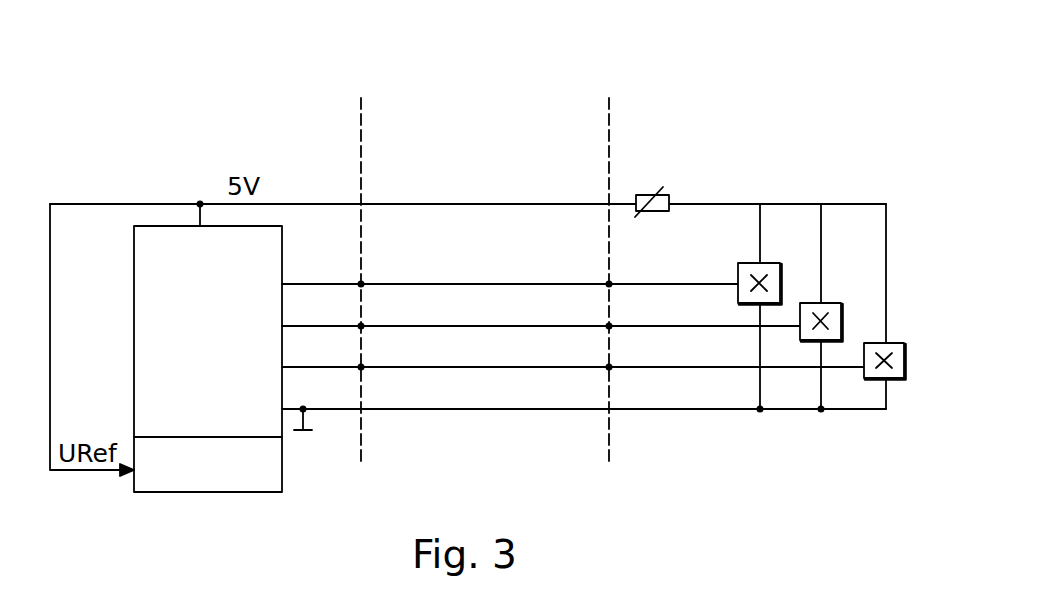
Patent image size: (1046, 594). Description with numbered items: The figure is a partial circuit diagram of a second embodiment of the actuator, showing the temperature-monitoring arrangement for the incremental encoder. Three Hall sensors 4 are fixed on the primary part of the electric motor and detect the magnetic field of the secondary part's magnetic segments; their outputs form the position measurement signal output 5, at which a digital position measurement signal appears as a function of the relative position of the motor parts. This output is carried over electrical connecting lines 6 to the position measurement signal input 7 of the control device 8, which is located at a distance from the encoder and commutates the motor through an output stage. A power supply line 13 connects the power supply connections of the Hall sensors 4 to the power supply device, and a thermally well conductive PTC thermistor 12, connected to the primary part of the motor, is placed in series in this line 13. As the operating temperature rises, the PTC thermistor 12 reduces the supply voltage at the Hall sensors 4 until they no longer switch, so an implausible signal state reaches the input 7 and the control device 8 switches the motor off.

The Hall sensors 4 is at (812, 313).
The position measurement signal output 5 is at (609, 367).
The electrical connecting lines 6 is at (492, 367).
The position measurement signal input 7 is at (361, 367).
The control device 8 is at (218, 336).
The PTC thermistor 12 is at (648, 193).
The power supply line 13 is at (534, 203).